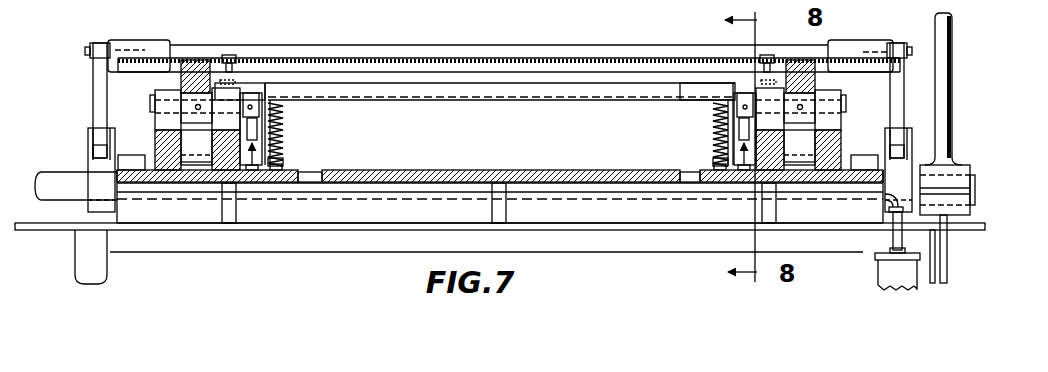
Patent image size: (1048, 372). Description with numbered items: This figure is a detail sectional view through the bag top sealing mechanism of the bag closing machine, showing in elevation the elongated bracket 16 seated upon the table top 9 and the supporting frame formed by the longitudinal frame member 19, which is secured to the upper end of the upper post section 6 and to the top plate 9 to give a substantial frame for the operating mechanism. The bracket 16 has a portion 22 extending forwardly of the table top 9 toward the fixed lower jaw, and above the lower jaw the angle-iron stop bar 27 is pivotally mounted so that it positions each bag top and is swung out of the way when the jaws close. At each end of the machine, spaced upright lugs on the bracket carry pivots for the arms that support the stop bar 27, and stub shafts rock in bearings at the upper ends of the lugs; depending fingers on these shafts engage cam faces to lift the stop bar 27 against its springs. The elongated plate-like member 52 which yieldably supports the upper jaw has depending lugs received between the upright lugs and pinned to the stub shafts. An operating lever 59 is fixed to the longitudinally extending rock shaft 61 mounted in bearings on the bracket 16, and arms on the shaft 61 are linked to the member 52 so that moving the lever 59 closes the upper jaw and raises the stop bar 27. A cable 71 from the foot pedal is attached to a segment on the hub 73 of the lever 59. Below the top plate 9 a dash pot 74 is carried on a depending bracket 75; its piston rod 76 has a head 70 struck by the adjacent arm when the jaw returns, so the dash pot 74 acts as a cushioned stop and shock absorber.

The upper post section 6 is at (75, 262).
The table top 9 is at (291, 230).
The elongated bracket 16 is at (571, 188).
The longitudinal frame member 19 is at (362, 247).
The forwardly extending portion of bracket 22 is at (442, 170).
The stop bar 27 is at (557, 97).
The elongated plate-like member 52 is at (366, 56).
The operating lever 59 is at (953, 42).
The rock shaft 61 is at (50, 180).
The head 70 is at (882, 203).
The cable 71 is at (948, 258).
The hub 73 is at (958, 168).
The dash pot 74 is at (892, 272).
The depending bracket 75 is at (875, 257).
The piston rod 76 is at (892, 238).